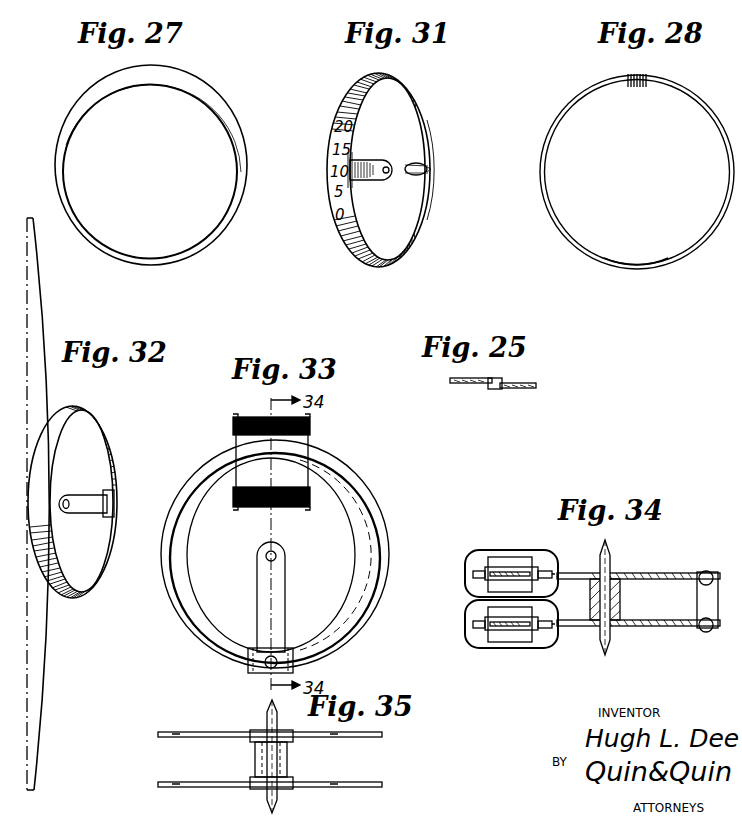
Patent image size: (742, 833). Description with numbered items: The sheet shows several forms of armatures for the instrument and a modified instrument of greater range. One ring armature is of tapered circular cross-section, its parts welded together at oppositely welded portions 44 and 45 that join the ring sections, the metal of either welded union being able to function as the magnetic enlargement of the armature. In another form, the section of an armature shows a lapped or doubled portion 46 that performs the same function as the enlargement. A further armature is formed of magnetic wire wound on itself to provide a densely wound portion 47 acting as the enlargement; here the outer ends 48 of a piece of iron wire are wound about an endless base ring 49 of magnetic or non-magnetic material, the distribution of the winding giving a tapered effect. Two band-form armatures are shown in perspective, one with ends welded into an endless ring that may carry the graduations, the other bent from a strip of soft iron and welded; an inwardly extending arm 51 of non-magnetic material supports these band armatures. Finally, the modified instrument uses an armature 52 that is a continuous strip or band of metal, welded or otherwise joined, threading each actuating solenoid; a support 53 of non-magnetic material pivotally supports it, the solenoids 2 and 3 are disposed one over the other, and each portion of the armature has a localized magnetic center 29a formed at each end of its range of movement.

In FIG. 33, the solenoid 2 is at (310, 427).
In FIG. 34, the solenoid 2 is at (470, 573).
In FIG. 34, the solenoid 3 is at (470, 622).
In FIG. 33, the localized magnetic center 29a is at (188, 550).
In FIG. 27, the welded portion 44 is at (151, 65).
In FIG. 27, the welded portion 45 is at (149, 258).
In FIG. 25, the lapped or doubled portion 46 is at (494, 389).
In FIG. 28, the densely wound portion 47 is at (637, 88).
In FIG. 28, the outer ends 48 is at (546, 180).
In FIG. 28, the endless base ring 49 is at (640, 263).
In FIG. 31, the inwardly extending arm 51 is at (380, 160).
In FIG. 32, the inwardly extending arm 51 is at (80, 495).
In FIG. 33, the armature 52 is at (385, 545).
In FIG. 34, the armature 52 is at (576, 620).
In FIG. 35, the armature 52 is at (383, 757).
In FIG. 33, the support 53 is at (257, 598).
In FIG. 34, the support 53 is at (620, 602).
In FIG. 35, the support 53 is at (258, 761).